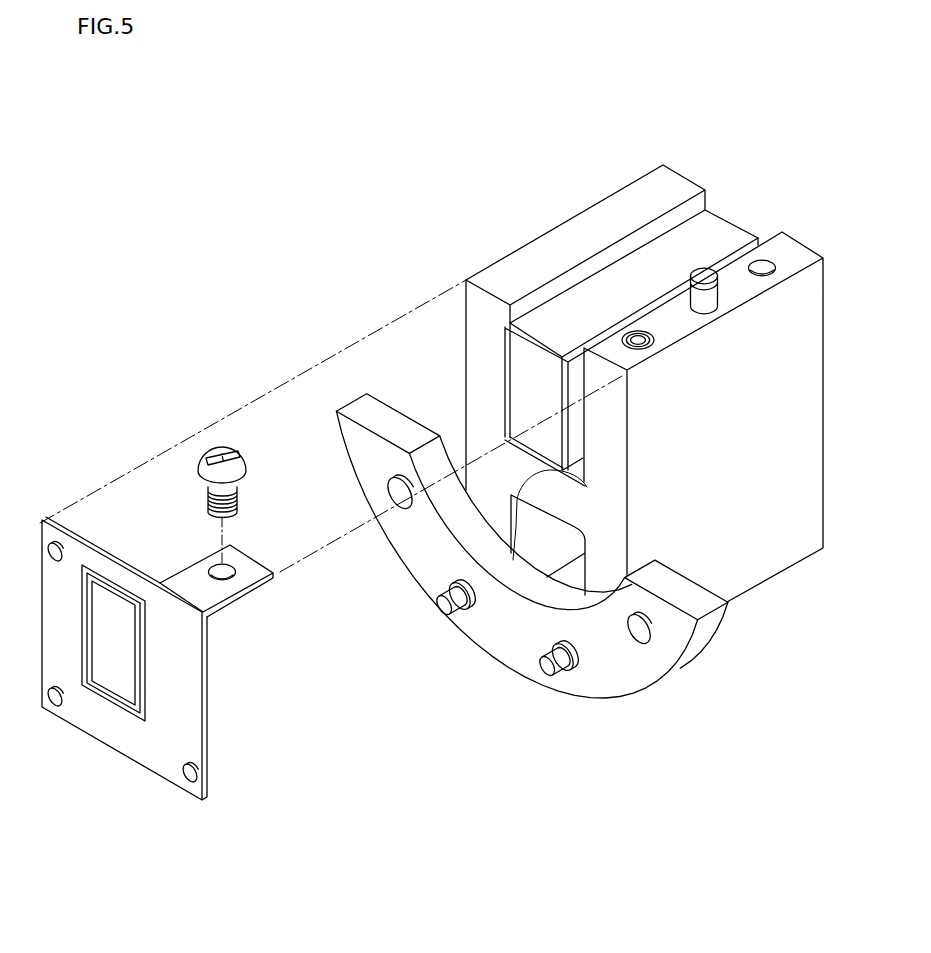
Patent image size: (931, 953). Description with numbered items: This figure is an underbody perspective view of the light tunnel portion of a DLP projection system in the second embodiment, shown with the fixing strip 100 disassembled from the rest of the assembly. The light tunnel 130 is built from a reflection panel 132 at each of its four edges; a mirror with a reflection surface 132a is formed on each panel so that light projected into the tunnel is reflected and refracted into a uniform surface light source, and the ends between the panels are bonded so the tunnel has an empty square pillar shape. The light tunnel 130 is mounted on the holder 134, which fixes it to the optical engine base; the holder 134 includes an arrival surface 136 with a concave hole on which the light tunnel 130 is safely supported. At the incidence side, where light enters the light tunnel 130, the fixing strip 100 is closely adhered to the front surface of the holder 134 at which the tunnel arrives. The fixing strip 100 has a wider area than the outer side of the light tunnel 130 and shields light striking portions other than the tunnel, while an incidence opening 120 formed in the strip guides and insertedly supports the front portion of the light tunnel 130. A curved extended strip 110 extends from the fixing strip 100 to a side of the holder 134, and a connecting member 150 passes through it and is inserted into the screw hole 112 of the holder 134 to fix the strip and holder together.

The fixing strip 100 is at (177, 710).
The curved extended strip 110 is at (199, 593).
The screw hole 112 is at (237, 568).
The incidence opening 120 is at (102, 690).
The light tunnel 130 is at (712, 227).
The reflection panel 132 is at (528, 349).
The reflection surface 132a is at (527, 389).
The holder 134 is at (597, 220).
The arrival surface 136 is at (513, 560).
The connecting member 150 is at (210, 468).